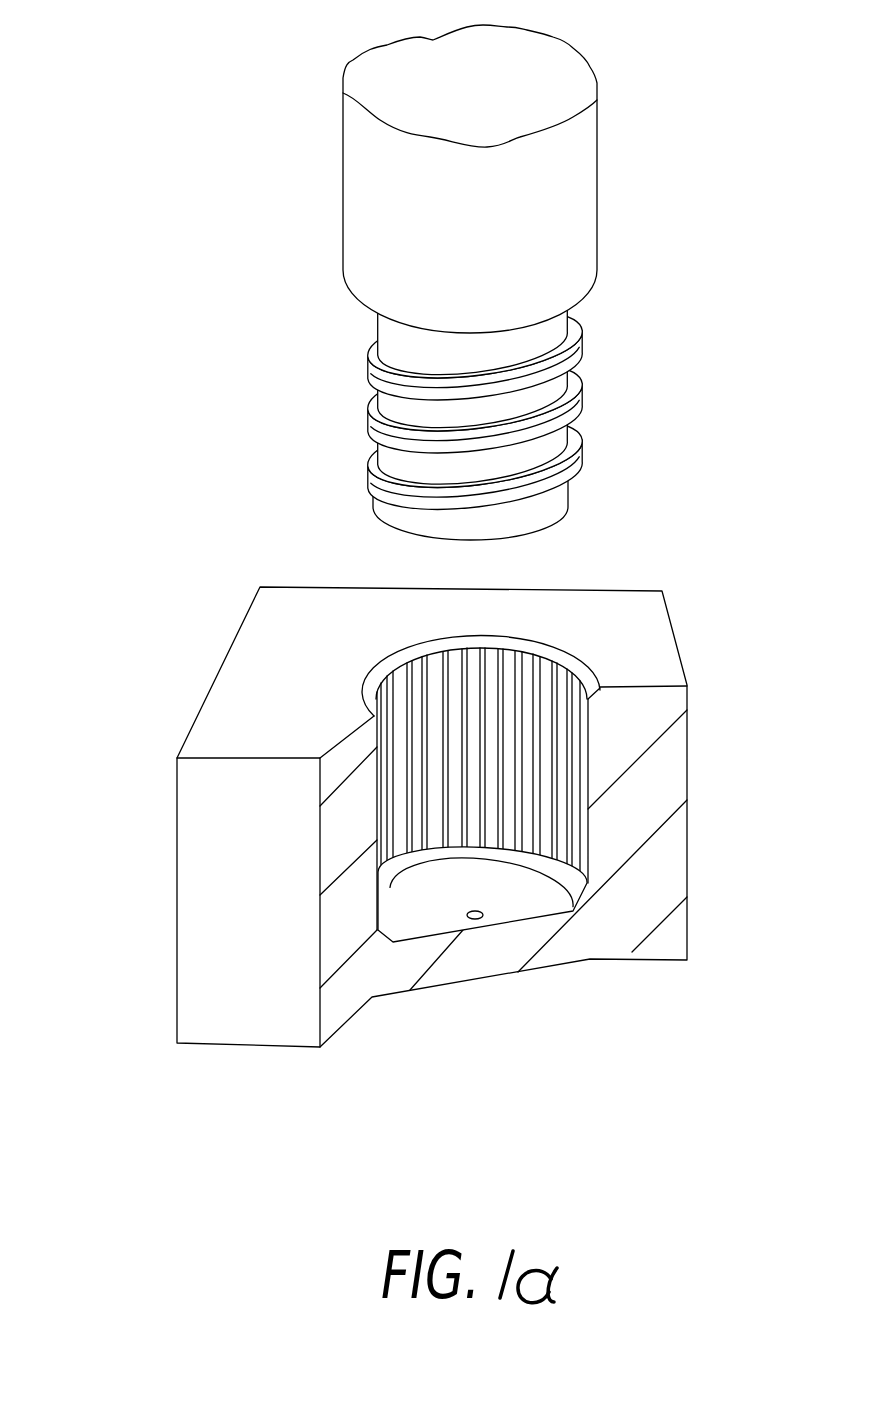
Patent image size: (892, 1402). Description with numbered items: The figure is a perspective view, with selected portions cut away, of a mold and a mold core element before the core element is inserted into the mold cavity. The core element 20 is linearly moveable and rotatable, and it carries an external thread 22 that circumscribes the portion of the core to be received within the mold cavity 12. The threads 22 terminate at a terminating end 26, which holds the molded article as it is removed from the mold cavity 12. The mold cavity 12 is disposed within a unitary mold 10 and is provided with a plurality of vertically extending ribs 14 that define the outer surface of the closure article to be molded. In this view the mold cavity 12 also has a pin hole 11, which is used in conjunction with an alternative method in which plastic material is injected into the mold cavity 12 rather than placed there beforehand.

The unitary mold 10 is at (232, 642).
The pin hole 11 is at (467, 913).
The mold cavity 12 is at (507, 705).
The vertically extending ribs 14 is at (410, 700).
The mold core element 20 is at (355, 172).
The external thread 22 is at (362, 363).
The terminating end 26 is at (370, 499).